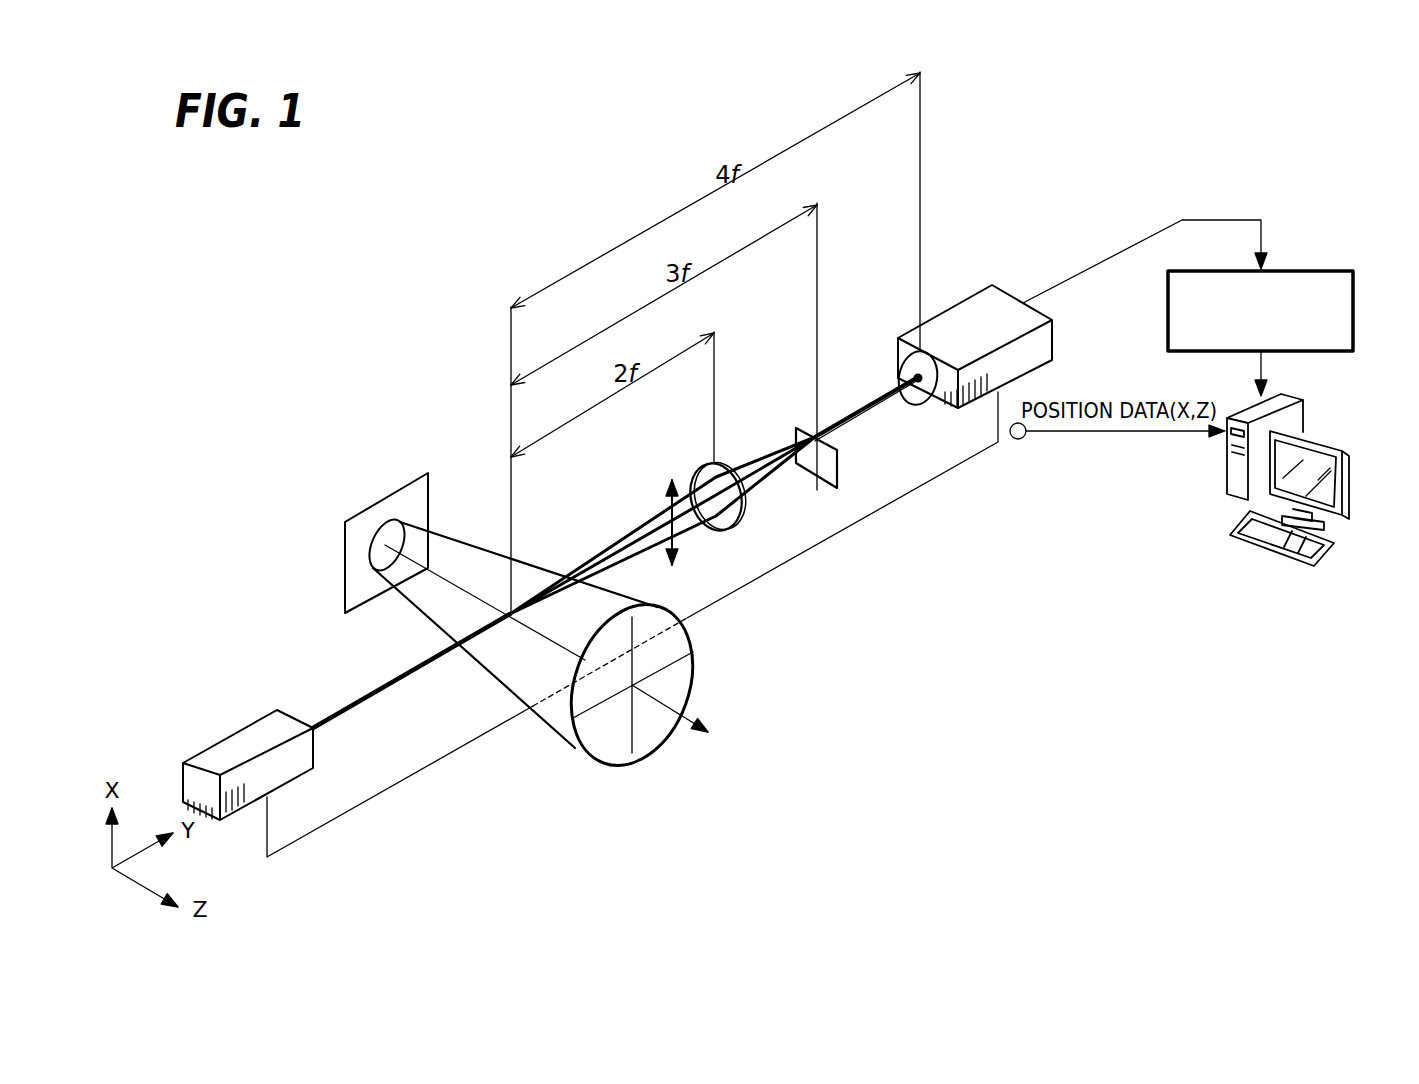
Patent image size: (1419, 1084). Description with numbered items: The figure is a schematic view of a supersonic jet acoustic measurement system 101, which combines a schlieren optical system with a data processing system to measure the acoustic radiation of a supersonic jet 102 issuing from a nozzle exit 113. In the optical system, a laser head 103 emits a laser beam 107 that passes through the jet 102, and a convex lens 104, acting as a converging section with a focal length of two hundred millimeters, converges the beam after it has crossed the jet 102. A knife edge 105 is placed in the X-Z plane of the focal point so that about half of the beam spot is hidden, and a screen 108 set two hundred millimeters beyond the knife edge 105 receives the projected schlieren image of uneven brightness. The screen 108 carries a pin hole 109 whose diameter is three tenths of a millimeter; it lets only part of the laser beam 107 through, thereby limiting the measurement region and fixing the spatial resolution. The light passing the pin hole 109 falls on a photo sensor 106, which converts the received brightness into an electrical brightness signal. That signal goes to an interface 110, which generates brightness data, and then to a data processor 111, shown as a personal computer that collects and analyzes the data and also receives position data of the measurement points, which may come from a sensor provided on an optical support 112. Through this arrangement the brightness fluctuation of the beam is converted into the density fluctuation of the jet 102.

The supersonic jet acoustic measurement system 101 is at (975, 737).
The supersonic jet 102 is at (548, 738).
The laser head 103 is at (242, 760).
The convex lens 104 is at (716, 512).
The knife edge 105 is at (832, 484).
The photo sensor 106 is at (988, 317).
The laser beam 107 is at (407, 680).
The screen 108 is at (937, 398).
The pin hole 109 is at (918, 386).
The interface 110 is at (1297, 268).
The data processor 111 is at (1359, 558).
The optical support 112 is at (368, 802).
The nozzle exit 113 is at (388, 520).